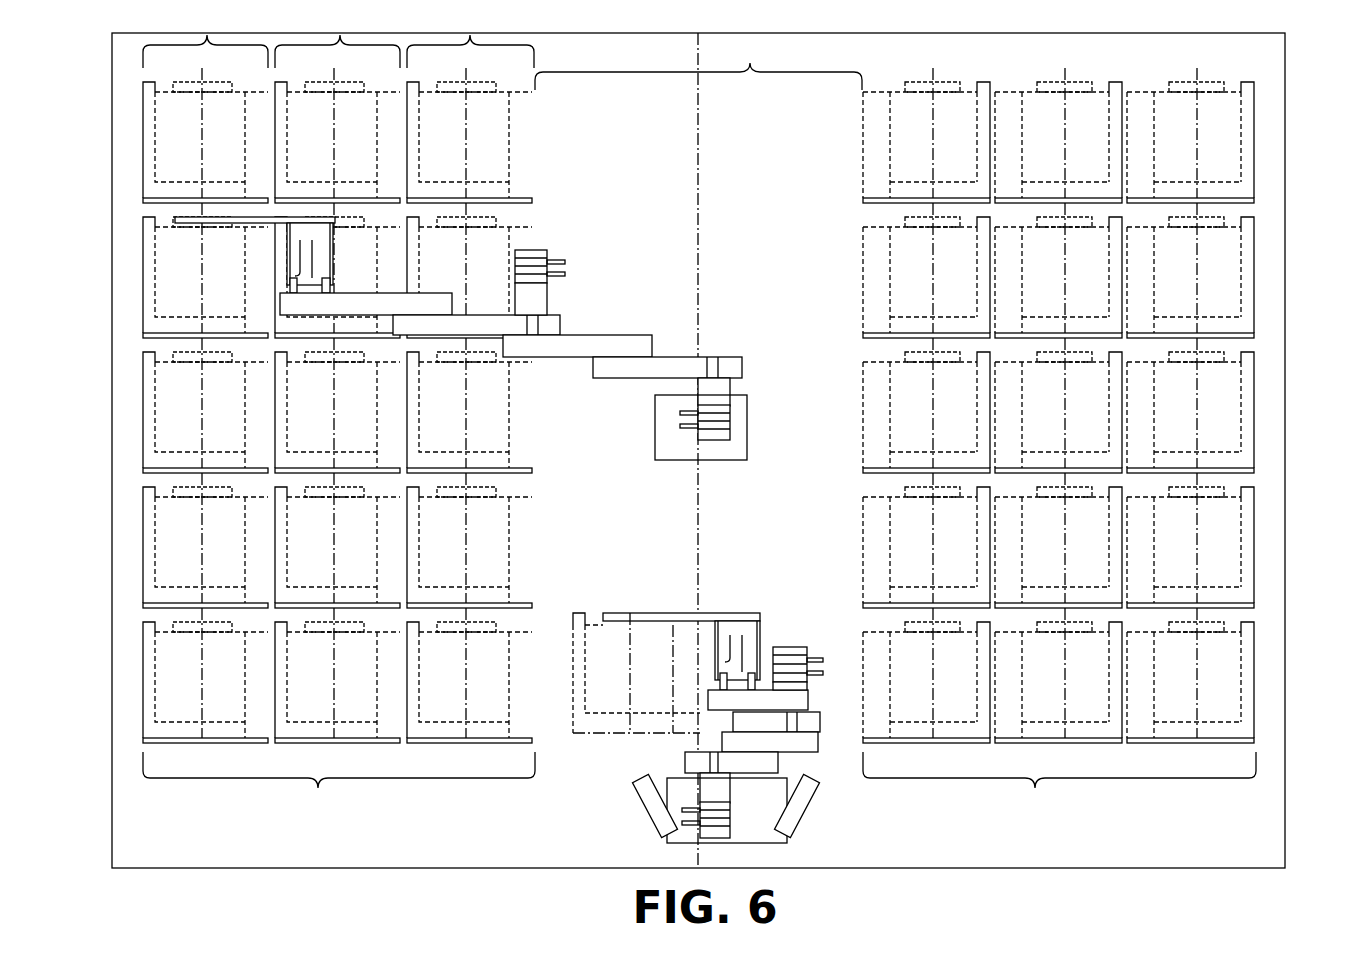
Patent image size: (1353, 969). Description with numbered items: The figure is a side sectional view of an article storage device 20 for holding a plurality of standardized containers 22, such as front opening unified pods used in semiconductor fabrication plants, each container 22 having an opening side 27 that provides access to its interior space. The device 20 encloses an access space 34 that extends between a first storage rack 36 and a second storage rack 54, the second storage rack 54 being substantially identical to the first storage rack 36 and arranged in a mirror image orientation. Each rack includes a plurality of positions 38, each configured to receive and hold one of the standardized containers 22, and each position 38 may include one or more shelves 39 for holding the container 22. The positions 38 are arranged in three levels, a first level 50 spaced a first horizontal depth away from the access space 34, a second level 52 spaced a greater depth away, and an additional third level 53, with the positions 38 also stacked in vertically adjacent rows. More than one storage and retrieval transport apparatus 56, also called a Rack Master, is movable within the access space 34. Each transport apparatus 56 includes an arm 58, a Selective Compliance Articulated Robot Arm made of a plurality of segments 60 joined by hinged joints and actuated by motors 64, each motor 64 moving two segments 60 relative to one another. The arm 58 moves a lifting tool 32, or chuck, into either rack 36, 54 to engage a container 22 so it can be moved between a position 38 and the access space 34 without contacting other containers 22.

The article storage device 20 is at (94, 89).
The standardized container 22 is at (170, 138).
The opening side 27 is at (145, 555).
The lifting tool 32 is at (180, 219).
The access space 34 is at (698, 66).
The first storage rack 36 is at (339, 789).
The position 38 is at (698, 405).
The shelf 39 is at (257, 197).
The first level 50 is at (470, 37).
The second level 52 is at (337, 37).
The third level 53 is at (205, 37).
The second storage rack 54 is at (1059, 789).
The storage and retrieval transport apparatus 56 is at (722, 460).
The arm 58 is at (666, 354).
The segment 60 is at (433, 293).
The motor 64 is at (546, 255).